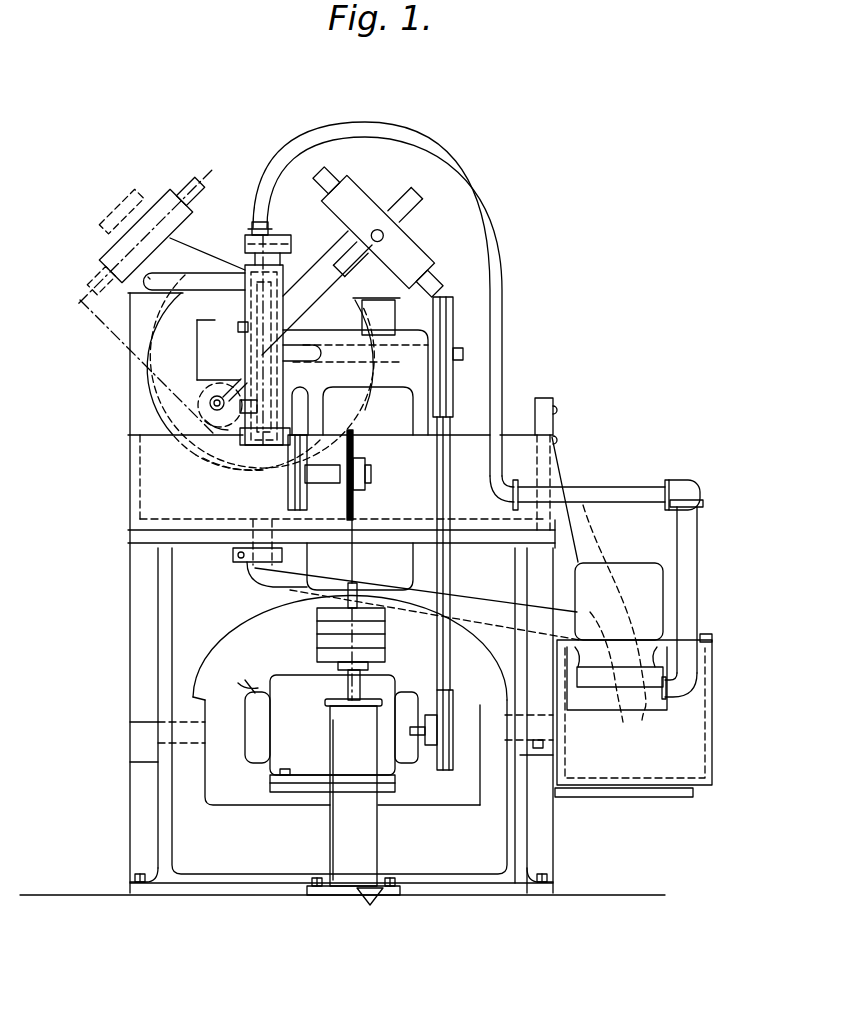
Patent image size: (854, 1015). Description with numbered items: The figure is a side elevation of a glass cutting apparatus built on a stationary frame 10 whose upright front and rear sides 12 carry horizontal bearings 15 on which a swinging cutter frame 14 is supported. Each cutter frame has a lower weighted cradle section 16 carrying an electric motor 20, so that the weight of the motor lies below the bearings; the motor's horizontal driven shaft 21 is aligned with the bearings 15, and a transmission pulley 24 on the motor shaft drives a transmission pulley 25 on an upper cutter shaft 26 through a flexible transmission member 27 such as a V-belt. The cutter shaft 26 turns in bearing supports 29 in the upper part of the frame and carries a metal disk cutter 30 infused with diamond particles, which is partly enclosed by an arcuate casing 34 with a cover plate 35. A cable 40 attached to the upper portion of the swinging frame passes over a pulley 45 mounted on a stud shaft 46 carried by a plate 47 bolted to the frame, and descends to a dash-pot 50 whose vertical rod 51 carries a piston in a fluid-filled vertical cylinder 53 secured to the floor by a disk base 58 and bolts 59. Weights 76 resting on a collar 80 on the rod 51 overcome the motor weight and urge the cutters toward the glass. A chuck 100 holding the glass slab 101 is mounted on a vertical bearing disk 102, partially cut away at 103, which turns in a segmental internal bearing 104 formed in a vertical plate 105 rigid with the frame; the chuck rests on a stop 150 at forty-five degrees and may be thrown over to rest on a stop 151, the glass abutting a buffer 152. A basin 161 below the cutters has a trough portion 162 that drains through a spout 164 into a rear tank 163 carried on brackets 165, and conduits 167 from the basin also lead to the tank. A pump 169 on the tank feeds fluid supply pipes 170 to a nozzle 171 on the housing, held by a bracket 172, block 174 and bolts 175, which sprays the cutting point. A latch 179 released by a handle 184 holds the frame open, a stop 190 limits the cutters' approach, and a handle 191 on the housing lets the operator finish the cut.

The stationary frame 10 is at (130, 780).
The upright front and rear sides 12 is at (160, 627).
The swinging cutter frame 14 is at (217, 620).
The horizontal bearings 15 is at (137, 747).
The weighted cradle section 16 is at (237, 863).
The electric motor 20 is at (265, 760).
The driven shaft 21 is at (458, 727).
The transmission pulley 24 is at (440, 773).
The transmission pulley 25 is at (470, 320).
The cutter shaft 26 is at (463, 356).
The flexible transmission member 27 is at (447, 578).
The bearing supports 29 is at (345, 330).
The metal disk cutter 30 is at (215, 435).
The arcuate casing 34 is at (343, 238).
The cover plate 35 is at (165, 380).
The cable 40 is at (355, 560).
The pulley 45 is at (353, 500).
The stud shaft 46 is at (360, 470).
The plate 47 is at (292, 485).
The dash-pot 50 is at (378, 845).
The vertical rod 51 is at (347, 688).
The vertical cylinder 53 is at (331, 836).
The disk base 58 is at (340, 892).
The bolts 59 is at (370, 899).
The weights 76 is at (380, 648).
The collar 80 is at (368, 668).
The chuck 100 is at (338, 233).
The glass slab or plate 101 is at (408, 208).
The vertical bearing disk 102 is at (153, 390).
The cut-away portion 103 is at (198, 340).
The segmental internal bearing 104 is at (140, 428).
The vertical plate 105 is at (128, 307).
The stop 150 is at (388, 300).
The stop 151 is at (140, 305).
The buffer 152 is at (233, 386).
The basin 161 is at (140, 472).
The trough portion 162 is at (512, 430).
The rear tank 163 is at (697, 743).
The spout 164 is at (565, 468).
The brackets 165 is at (636, 792).
The conduits 167 is at (251, 570).
The pump 169 is at (657, 598).
The fluid supply pipes 170 is at (662, 455).
The nozzle 171 is at (262, 308).
The bracket 172 is at (278, 236).
The block 174 is at (253, 229).
The bolts 175 is at (247, 245).
The latch 179 is at (210, 460).
The handle 184 is at (210, 440).
The stop 190 is at (238, 327).
The handle 191 is at (148, 277).